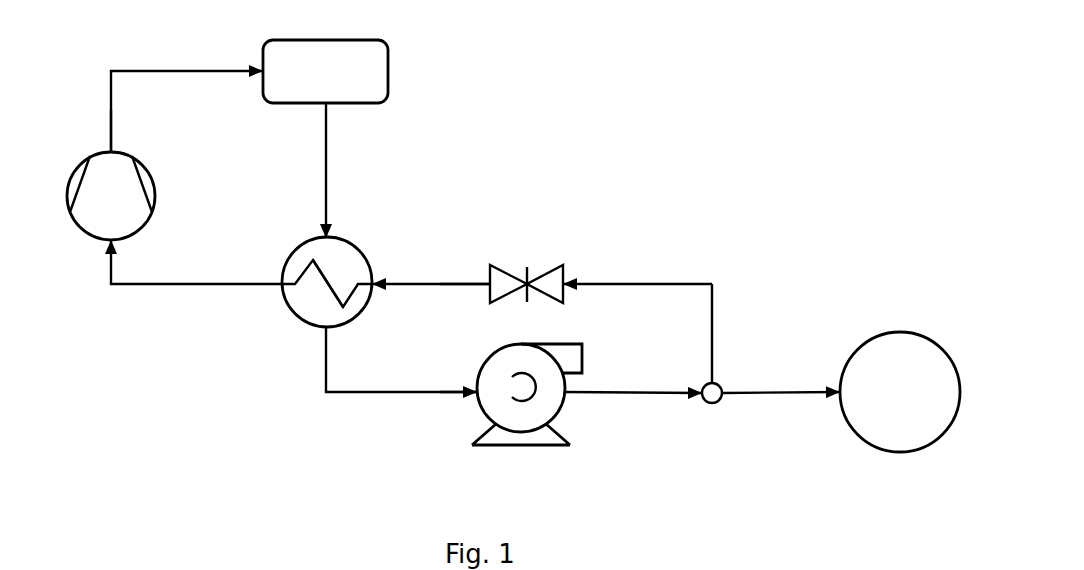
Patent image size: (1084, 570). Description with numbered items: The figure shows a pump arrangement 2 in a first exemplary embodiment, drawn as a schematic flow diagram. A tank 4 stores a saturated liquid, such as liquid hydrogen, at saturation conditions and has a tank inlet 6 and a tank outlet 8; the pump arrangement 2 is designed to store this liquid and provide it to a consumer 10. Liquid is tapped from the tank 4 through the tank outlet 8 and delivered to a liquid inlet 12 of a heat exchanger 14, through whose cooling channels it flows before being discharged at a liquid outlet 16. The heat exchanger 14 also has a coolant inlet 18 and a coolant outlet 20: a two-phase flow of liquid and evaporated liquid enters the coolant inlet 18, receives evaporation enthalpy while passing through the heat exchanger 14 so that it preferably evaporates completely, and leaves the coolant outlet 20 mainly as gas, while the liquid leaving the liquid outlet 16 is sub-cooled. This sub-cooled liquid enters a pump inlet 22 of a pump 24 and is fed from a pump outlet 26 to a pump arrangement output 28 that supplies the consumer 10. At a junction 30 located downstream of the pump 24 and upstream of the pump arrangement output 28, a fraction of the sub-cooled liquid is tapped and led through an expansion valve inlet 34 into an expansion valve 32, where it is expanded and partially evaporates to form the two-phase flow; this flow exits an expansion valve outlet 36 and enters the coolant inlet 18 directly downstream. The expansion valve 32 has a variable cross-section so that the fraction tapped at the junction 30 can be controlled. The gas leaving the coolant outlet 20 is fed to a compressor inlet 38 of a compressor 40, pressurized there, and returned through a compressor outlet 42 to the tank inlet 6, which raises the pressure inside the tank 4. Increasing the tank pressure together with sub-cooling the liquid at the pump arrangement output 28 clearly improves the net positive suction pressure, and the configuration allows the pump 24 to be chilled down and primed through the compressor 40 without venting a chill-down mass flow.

The pump arrangement 2 is at (658, 118).
The tank 4 is at (372, 76).
The tank inlet 6 is at (263, 66).
The tank outlet 8 is at (326, 106).
The consumer 10 is at (887, 350).
The liquid inlet 12 is at (320, 238).
The heat exchanger 14 is at (340, 255).
The liquid outlet 16 is at (326, 330).
The coolant inlet 18 is at (373, 270).
The coolant outlet 20 is at (278, 284).
The pump inlet 22 is at (477, 397).
The pump 24 is at (520, 417).
The pump outlet 26 is at (565, 398).
The pump arrangement output 28 is at (779, 390).
The junction 30 is at (708, 403).
The expansion valve 32 is at (543, 278).
The expansion valve inlet 34 is at (563, 273).
The expansion valve outlet 36 is at (487, 283).
The compressor inlet 38 is at (115, 243).
The compressor 40 is at (98, 223).
The compressor outlet 42 is at (111, 152).